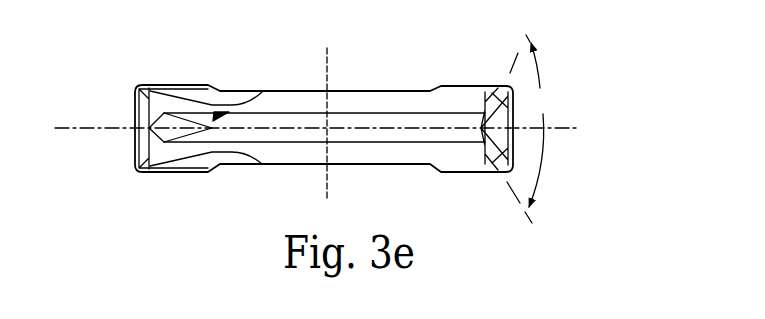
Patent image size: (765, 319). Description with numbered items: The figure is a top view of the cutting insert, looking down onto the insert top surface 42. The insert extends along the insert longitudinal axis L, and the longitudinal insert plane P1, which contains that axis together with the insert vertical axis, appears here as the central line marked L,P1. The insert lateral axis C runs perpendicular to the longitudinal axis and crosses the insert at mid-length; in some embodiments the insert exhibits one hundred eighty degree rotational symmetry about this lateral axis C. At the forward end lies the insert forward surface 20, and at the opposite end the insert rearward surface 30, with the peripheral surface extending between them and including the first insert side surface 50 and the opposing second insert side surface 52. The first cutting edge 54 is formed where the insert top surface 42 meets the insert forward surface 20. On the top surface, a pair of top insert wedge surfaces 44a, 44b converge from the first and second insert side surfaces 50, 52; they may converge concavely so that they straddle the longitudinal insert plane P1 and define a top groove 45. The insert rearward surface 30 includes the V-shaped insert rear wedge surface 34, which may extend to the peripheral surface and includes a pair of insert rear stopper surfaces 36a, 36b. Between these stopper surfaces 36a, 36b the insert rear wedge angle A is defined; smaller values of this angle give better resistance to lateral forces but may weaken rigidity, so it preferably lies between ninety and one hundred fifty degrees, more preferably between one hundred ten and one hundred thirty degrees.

The insert forward surface 20 is at (85, 133).
The insert rearward surface 30 is at (572, 109).
The insert rear wedge surface 34 is at (561, 146).
The insert rear stopper surface 36a is at (503, 170).
The insert rear stopper surface 36b is at (503, 90).
The insert top surface 42 is at (338, 93).
The top insert wedge surface 44a is at (387, 150).
The top insert wedge surface 44b is at (384, 105).
The top groove 45 is at (220, 117).
The first insert side surface 50 is at (298, 91).
The second insert side surface 52 is at (280, 165).
The first cutting edge 54 is at (135, 113).
The insert rear wedge angle A is at (530, 129).
The insert lateral axis C is at (327, 50).
The insert longitudinal axis and longitudinal insert plane L,P1 is at (92, 127).